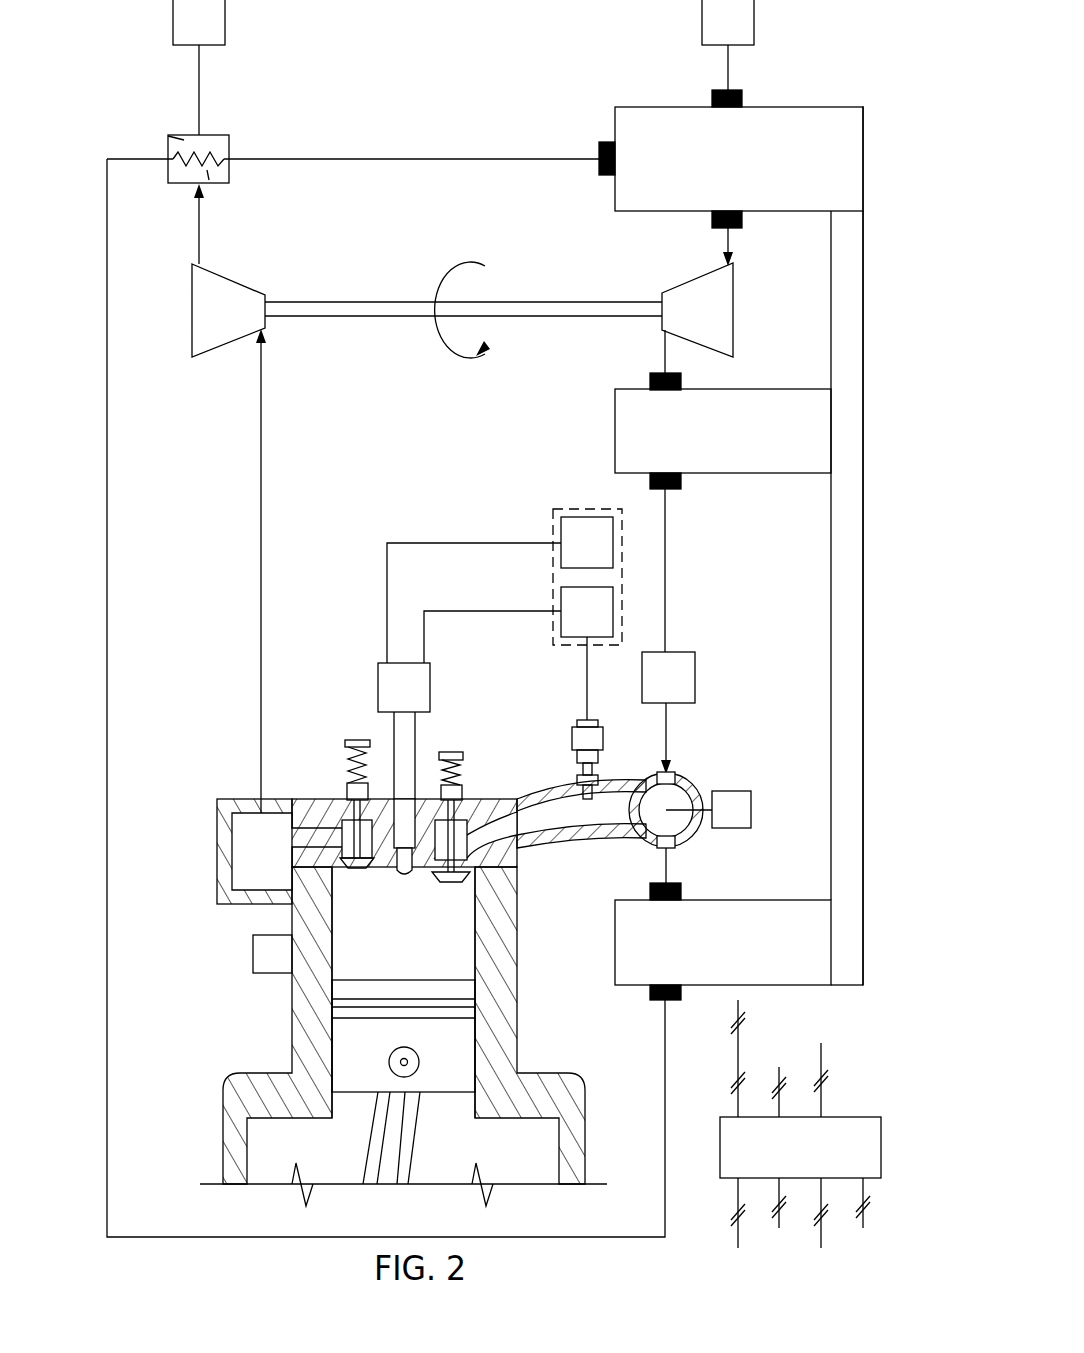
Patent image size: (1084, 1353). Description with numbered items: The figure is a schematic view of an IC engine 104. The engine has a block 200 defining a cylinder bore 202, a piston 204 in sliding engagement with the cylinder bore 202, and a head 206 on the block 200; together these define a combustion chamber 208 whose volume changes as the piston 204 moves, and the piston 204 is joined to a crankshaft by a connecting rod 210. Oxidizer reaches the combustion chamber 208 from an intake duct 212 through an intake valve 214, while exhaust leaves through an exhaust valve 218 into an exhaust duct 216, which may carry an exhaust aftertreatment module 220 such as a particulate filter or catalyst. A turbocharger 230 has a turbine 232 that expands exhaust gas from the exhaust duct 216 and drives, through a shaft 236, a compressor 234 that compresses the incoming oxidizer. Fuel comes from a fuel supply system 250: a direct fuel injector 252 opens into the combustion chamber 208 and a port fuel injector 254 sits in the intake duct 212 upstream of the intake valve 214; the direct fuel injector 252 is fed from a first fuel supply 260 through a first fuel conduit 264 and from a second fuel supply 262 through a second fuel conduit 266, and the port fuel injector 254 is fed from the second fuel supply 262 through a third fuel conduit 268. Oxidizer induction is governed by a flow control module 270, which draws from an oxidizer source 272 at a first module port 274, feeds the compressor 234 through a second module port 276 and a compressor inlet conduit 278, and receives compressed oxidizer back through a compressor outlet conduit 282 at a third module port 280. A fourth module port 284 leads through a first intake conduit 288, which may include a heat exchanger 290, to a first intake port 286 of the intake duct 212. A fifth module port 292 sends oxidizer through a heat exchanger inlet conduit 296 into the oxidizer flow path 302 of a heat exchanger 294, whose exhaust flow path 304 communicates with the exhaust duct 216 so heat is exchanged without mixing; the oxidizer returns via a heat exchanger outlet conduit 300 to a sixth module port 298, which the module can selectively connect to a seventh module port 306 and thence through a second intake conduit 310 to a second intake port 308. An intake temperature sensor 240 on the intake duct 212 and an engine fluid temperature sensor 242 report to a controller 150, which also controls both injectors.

The IC engine 104 is at (820, 76).
The controller 150 is at (787, 1155).
The block 200 is at (292, 1025).
The cylinder bore 202 is at (332, 955).
The piston 204 is at (434, 1054).
The head 206 is at (518, 856).
The combustion chamber 208 is at (391, 924).
The connecting rod 210 is at (413, 1142).
The intake duct 212 is at (697, 783).
The intake valve 214 is at (490, 800).
The exhaust duct 216 is at (200, 228).
The exhaust valve 218 is at (315, 800).
The exhaust aftertreatment module 220 is at (186, 32).
The turbocharger 230 is at (352, 256).
The turbine 232 is at (208, 316).
The compressor 234 is at (691, 316).
The shaft 236 is at (580, 300).
The intake temperature sensor 240 is at (751, 810).
The engine fluid temperature sensor 242 is at (253, 953).
The fuel supply system 250 is at (553, 512).
The direct fuel injector 252 is at (391, 696).
The port fuel injector 254 is at (572, 736).
The first fuel supply 260 is at (574, 552).
The second fuel supply 262 is at (574, 620).
The first fuel conduit 264 is at (387, 580).
The second fuel conduit 266 is at (482, 611).
The third fuel conduit 268 is at (587, 682).
The flow control module 270 is at (714, 166).
The oxidizer source 272 is at (715, 32).
The first module port 274 is at (735, 108).
The second module port 276 is at (735, 210).
The compressor inlet conduit 278 is at (731, 240).
The third module port 280 is at (676, 390).
The compressor outlet conduit 282 is at (664, 357).
The fourth module port 284 is at (676, 473).
The first intake port 286 is at (672, 770).
The first intake conduit 288 is at (667, 563).
The heat exchanger 290 is at (655, 686).
The fifth module port 292 is at (616, 157).
The heat exchanger 294 is at (218, 135).
The heat exchanger inlet conduit 296 is at (512, 158).
The sixth module port 298 is at (676, 985).
The heat exchanger outlet conduit 300 is at (142, 1236).
The oxidizer flow path 302 is at (207, 170).
The exhaust flow path 304 is at (182, 140).
The seventh module port 306 is at (676, 900).
The second intake port 308 is at (670, 850).
The second intake conduit 310 is at (665, 875).